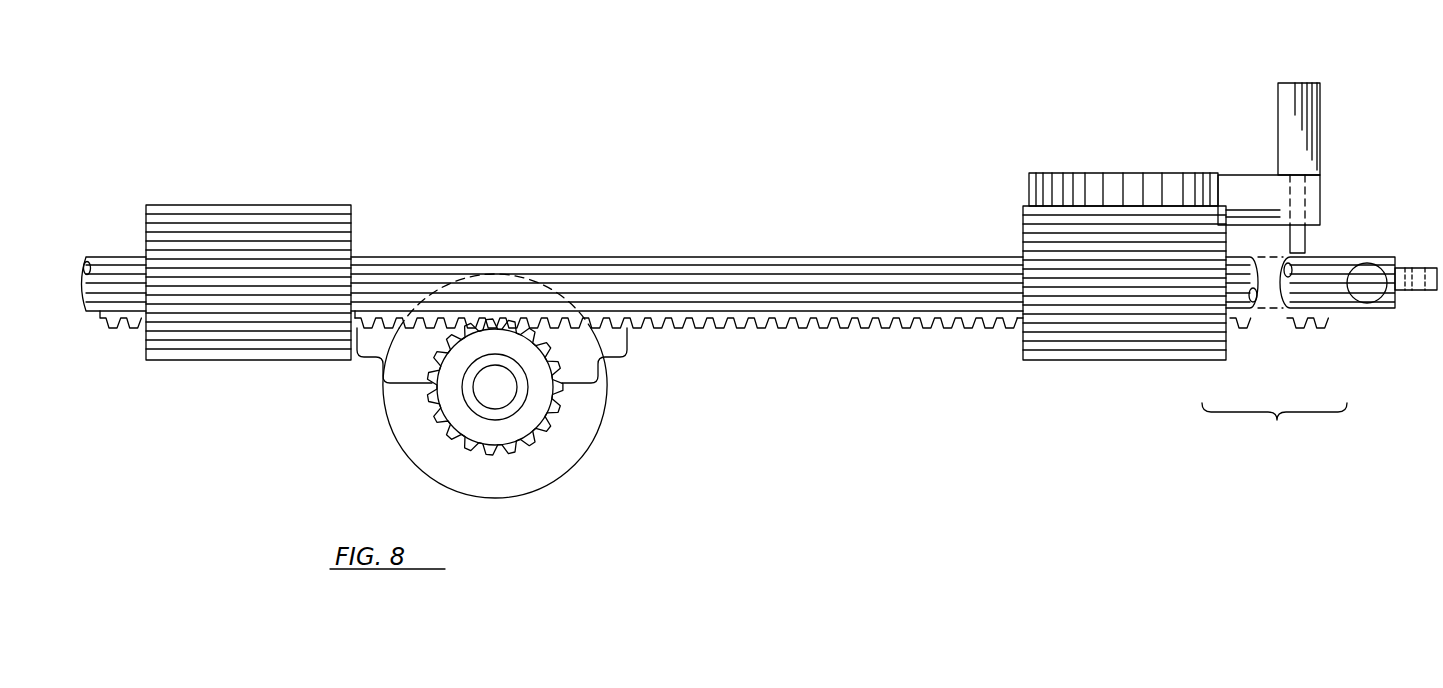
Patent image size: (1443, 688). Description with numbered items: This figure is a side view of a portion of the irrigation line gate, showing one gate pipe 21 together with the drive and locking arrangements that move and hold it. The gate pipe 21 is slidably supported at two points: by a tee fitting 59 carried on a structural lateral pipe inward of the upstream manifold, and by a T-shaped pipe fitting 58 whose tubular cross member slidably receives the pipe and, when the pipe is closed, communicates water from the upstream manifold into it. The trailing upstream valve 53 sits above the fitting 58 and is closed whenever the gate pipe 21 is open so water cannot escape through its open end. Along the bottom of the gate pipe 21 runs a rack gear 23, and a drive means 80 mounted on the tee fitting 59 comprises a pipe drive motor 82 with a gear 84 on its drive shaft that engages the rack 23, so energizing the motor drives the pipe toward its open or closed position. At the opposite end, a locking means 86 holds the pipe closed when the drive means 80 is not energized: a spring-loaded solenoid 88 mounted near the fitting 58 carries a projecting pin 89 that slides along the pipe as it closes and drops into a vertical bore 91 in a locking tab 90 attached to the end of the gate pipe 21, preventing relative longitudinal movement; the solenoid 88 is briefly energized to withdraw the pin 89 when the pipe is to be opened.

The trailing gate pipe 21 is at (1342, 278).
The rack gear 23 is at (782, 328).
The trailing upstream valve 53 is at (1150, 173).
The T-shaped pipe fitting 58 is at (1183, 343).
The tee fitting 59 is at (310, 345).
The drive means 80 is at (655, 432).
The pipe drive motor 82 is at (418, 448).
The gear 84 is at (508, 435).
The locking means 86 is at (1361, 102).
The spring-loaded solenoid 88 is at (1293, 83).
The solenoid pin 89 is at (1290, 240).
The locking tab 90 is at (1430, 290).
The vertical bore 91 is at (1422, 268).